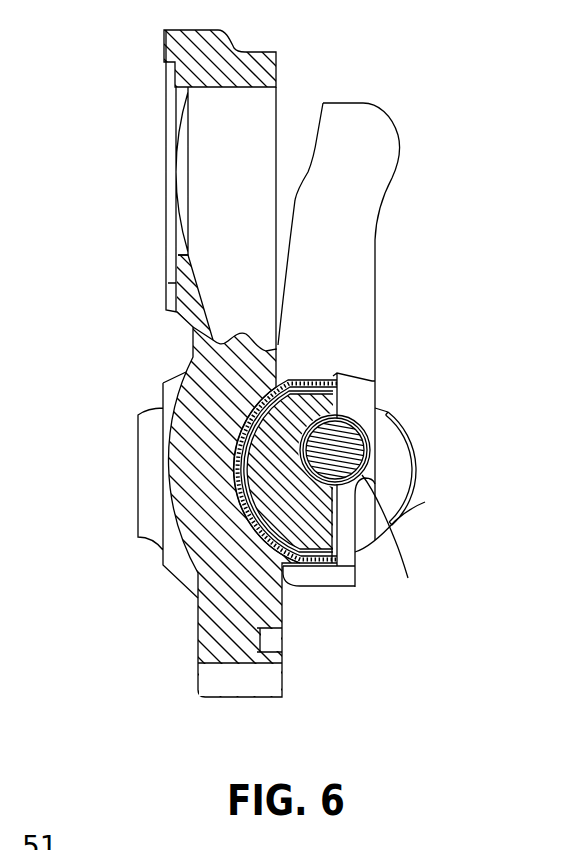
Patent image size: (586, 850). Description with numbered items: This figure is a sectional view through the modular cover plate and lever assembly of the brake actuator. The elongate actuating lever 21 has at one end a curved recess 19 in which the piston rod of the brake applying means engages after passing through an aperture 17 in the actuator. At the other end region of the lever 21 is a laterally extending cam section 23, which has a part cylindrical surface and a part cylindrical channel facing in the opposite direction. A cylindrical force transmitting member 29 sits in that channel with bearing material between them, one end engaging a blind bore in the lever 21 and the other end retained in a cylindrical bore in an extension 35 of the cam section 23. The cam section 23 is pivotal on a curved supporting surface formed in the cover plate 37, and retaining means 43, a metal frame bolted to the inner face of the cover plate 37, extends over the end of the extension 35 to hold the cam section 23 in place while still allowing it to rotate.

The aperture 17 is at (171, 128).
The curved recess 19 is at (318, 137).
The elongate actuating lever 21 is at (340, 293).
The cam section 23 is at (307, 585).
The cylindrical force transmitting member 29 is at (377, 543).
The extension 35 is at (393, 505).
The cover plate 37 is at (190, 392).
The retaining means 43 is at (415, 460).